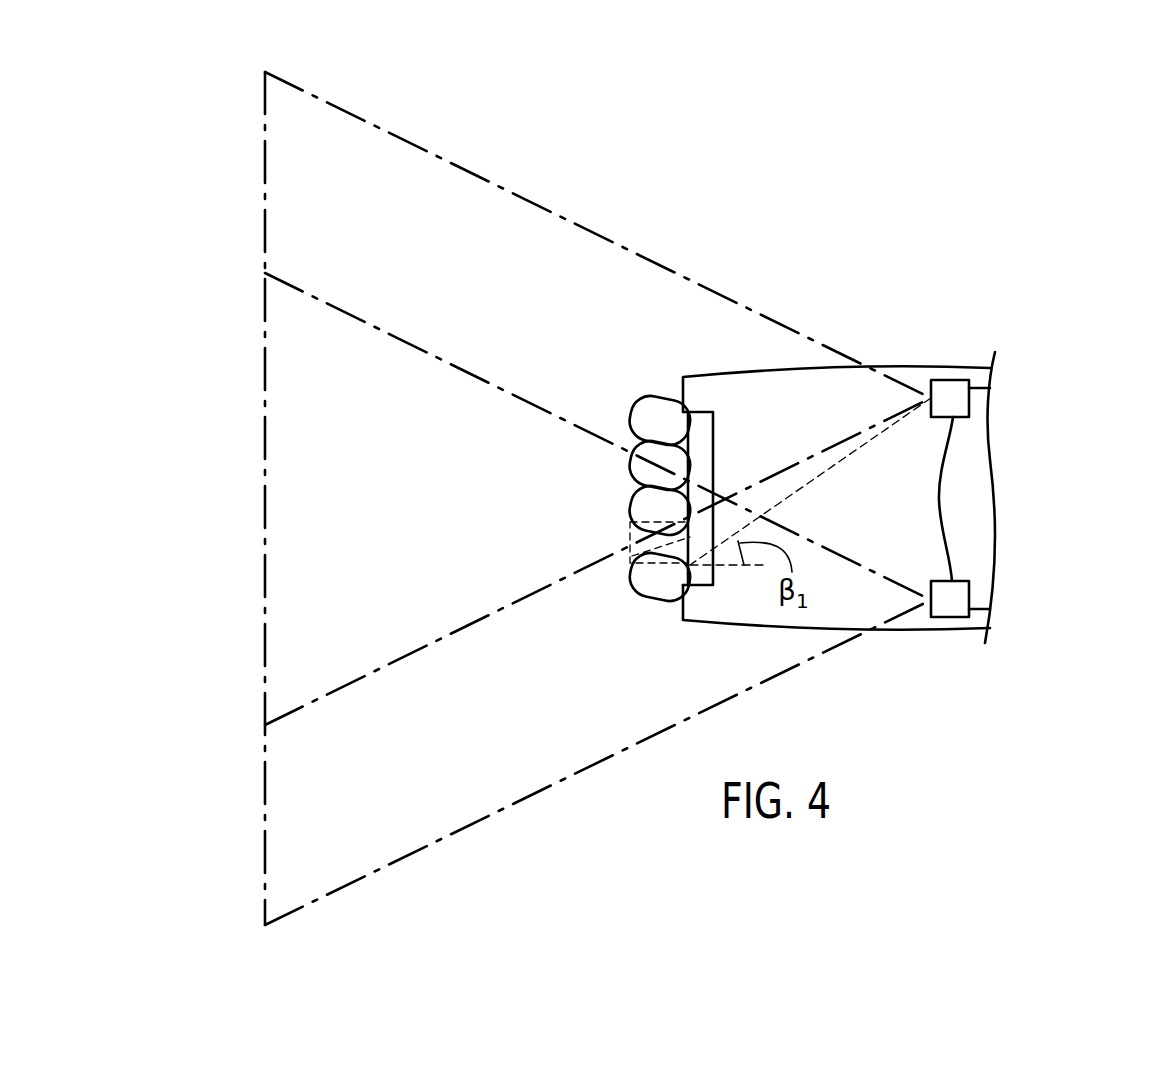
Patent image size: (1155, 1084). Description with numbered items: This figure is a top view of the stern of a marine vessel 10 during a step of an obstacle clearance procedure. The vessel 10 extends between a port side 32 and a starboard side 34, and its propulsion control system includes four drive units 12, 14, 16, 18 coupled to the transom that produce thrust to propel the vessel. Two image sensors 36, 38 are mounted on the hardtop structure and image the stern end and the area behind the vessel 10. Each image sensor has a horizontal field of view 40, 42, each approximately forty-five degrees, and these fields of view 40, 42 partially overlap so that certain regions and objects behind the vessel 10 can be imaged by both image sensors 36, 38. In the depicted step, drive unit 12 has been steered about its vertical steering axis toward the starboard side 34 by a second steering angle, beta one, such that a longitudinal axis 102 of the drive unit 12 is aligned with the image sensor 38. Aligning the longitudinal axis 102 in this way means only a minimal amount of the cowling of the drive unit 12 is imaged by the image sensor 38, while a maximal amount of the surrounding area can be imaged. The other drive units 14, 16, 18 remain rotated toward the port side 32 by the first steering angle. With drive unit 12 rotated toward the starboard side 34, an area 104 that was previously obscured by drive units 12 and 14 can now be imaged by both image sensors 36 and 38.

The marine vessel 10 is at (1099, 371).
The drive unit 12 is at (633, 580).
The drive unit 14 is at (632, 508).
The drive unit 16 is at (632, 465).
The drive unit 18 is at (632, 413).
The port side 32 is at (827, 264).
The starboard side 34 is at (828, 714).
The image sensor 36 is at (952, 617).
The image sensor 38 is at (953, 380).
The horizontal field of view 40 is at (559, 782).
The horizontal field of view 42 is at (579, 221).
The longitudinal axis 102 is at (818, 478).
The area 104 is at (630, 539).